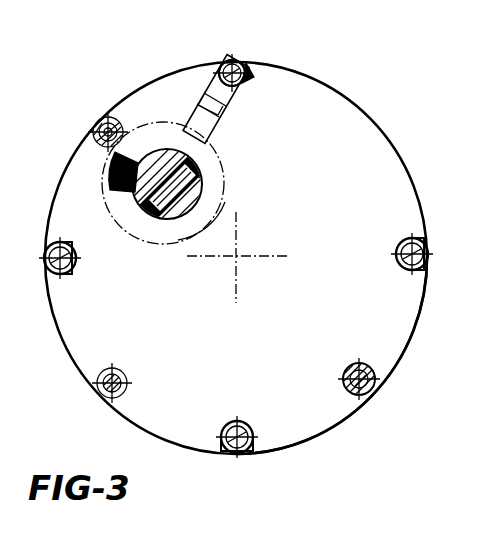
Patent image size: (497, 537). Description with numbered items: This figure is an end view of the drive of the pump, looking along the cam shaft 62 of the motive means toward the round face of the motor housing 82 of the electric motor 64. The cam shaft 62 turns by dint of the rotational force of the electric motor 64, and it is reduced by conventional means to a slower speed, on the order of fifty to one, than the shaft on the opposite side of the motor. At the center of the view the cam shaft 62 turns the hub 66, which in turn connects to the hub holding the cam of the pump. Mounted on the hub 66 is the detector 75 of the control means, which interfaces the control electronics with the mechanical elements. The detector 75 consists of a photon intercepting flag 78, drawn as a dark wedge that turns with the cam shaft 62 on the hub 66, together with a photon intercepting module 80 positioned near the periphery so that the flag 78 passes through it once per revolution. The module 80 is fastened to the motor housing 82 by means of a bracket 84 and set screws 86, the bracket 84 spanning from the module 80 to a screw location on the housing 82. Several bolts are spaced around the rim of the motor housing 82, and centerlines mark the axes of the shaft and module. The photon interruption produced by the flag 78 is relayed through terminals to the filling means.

The cam shaft 62 is at (167, 220).
The electric motor 64 is at (396, 166).
The hub 66 is at (196, 202).
The detector 75 is at (157, 121).
The photon intercepting flag 78 is at (109, 177).
The photon intercepting module 80 is at (212, 97).
The motor housing 82 is at (404, 332).
The bracket 84 is at (232, 95).
The set screws 86 is at (240, 63).